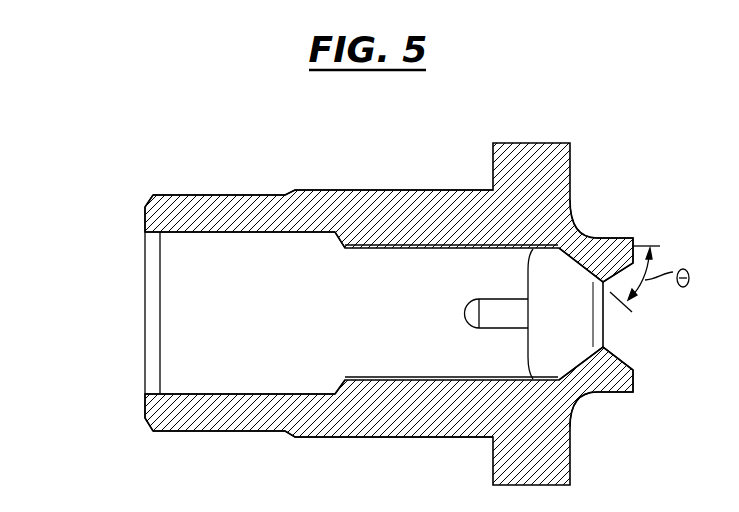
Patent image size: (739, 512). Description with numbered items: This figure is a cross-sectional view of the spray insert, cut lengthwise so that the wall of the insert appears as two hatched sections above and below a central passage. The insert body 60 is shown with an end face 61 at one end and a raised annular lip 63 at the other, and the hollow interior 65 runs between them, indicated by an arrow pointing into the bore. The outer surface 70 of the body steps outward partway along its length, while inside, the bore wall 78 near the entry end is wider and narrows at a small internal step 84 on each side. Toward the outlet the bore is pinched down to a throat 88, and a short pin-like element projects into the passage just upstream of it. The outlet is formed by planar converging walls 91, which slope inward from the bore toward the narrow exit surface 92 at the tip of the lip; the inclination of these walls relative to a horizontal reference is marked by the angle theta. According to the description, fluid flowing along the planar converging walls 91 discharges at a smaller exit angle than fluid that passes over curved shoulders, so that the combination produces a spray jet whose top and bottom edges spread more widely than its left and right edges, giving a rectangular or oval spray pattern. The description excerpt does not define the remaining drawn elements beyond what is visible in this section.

The fitting body 60 is at (527, 145).
The first end face 61 is at (148, 426).
The annular lip 63 is at (597, 238).
The axial bore 65 is at (188, 343).
The outer cylindrical surface 70 is at (340, 192).
The counterbore wall 78 is at (192, 232).
The internal step 84 is at (342, 245).
The pin / throat 88 is at (578, 327).
The planar converging walls 91 is at (582, 270).
The throat surface 92 is at (606, 333).